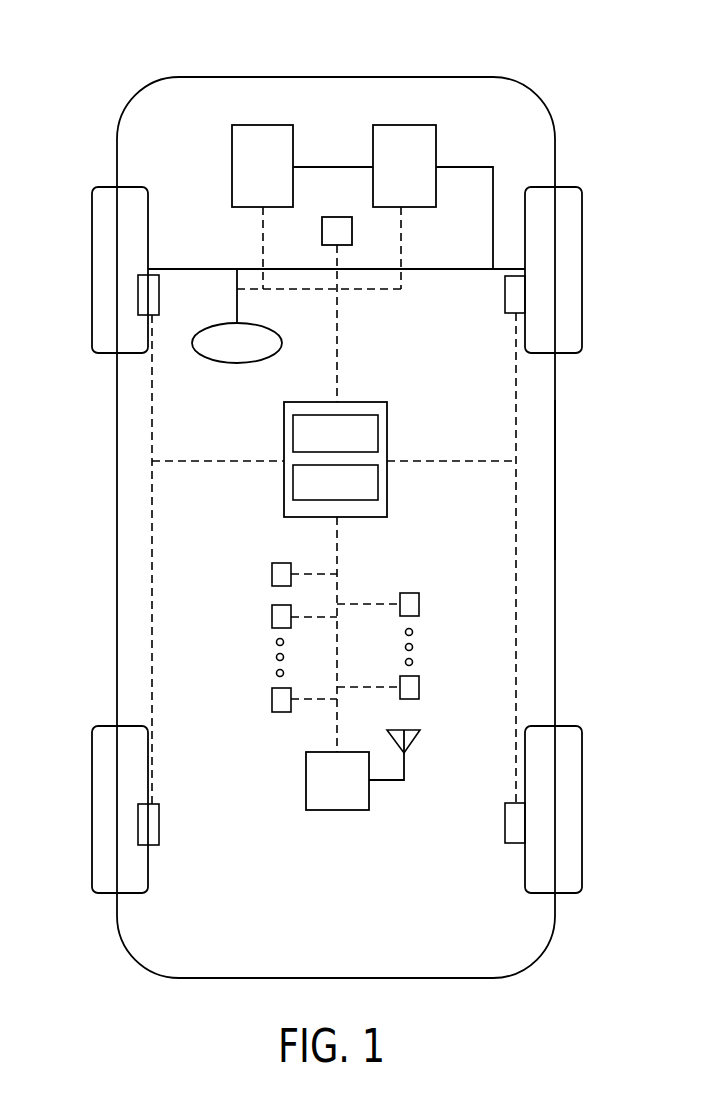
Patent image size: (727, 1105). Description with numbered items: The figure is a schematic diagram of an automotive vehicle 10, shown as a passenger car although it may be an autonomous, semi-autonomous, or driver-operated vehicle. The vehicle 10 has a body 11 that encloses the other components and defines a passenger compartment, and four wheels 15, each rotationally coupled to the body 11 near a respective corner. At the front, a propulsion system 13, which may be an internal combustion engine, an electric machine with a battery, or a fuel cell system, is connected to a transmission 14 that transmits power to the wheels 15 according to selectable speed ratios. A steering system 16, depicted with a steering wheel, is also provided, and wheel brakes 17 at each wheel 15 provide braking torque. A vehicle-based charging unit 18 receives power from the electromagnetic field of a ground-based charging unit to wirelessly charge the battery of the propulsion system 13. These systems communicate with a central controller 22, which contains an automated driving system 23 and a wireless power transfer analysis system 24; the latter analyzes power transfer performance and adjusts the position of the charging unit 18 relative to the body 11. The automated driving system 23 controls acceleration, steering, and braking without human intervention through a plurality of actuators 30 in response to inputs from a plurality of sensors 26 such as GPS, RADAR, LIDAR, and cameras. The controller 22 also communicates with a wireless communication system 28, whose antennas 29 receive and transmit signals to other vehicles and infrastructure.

The vehicle 10 is at (95, 84).
The body 11 is at (555, 500).
The propulsion system 13 is at (293, 141).
The transmission 14 is at (436, 140).
The wheels 15 is at (142, 236).
The steering system 16 is at (272, 331).
The wheel brakes 17 is at (148, 307).
The vehicle-based charging unit 18 is at (352, 222).
The controller 22 is at (334, 459).
The automated driving system 23 is at (293, 430).
The wireless power transfer analysis system 24 is at (378, 488).
The sensors 26 is at (272, 577).
The wireless communication system 28 is at (334, 810).
The antennas 29 is at (404, 770).
The actuators 30 is at (419, 602).